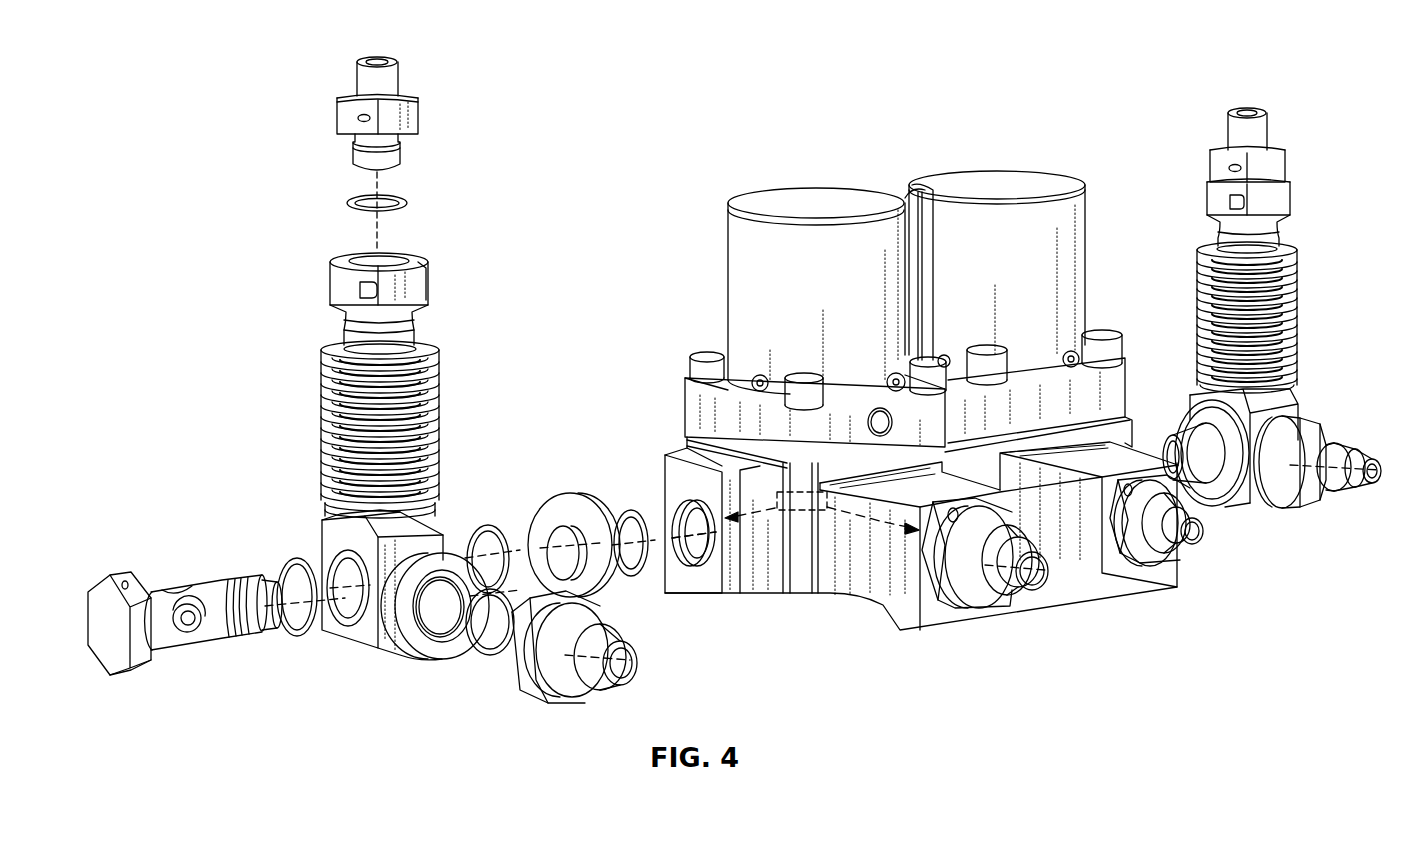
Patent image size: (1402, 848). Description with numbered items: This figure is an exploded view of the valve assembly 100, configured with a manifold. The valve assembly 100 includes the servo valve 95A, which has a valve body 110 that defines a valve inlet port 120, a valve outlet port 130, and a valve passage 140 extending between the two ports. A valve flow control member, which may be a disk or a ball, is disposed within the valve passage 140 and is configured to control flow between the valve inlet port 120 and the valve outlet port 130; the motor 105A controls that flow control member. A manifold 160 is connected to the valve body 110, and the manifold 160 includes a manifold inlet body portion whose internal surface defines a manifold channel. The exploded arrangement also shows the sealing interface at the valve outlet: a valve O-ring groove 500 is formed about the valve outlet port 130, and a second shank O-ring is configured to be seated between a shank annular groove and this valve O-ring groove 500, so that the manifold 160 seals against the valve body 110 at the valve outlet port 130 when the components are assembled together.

The valve assembly 100 is at (231, 74).
The manifold 160 is at (296, 422).
The valve outlet port 130 is at (686, 503).
The valve O-ring groove 500 is at (690, 566).
The valve body 110 is at (823, 583).
The valve passage 140 is at (880, 522).
The servo valve 95A is at (965, 607).
The valve inlet port 120 is at (1033, 573).
The motor 105A is at (745, 192).